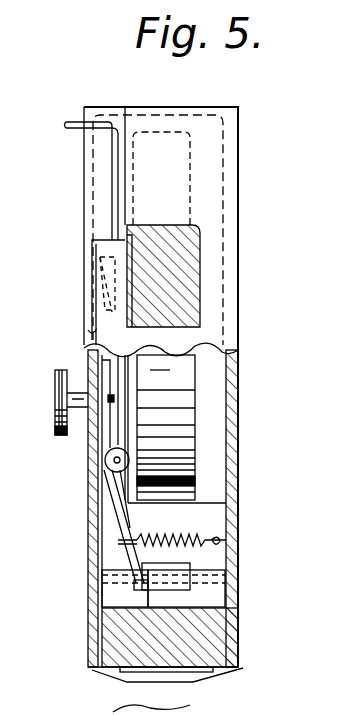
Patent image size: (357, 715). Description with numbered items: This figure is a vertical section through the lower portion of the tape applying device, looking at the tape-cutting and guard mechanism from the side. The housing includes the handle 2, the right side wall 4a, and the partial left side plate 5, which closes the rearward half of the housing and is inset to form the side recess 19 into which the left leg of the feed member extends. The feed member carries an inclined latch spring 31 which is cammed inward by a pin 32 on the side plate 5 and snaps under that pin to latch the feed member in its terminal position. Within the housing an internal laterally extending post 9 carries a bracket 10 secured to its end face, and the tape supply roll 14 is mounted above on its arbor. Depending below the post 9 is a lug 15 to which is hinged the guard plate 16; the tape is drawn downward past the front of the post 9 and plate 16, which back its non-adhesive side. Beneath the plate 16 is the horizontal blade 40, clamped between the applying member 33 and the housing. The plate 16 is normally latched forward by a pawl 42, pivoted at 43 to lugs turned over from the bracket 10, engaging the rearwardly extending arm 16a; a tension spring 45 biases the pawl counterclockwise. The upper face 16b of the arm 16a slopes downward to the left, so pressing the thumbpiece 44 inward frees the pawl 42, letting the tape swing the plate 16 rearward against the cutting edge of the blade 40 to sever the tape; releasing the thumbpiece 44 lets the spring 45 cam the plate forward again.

The handle 2 is at (200, 310).
The right side wall 4a is at (228, 160).
The partial left side plate 5 is at (88, 250).
The post 9 is at (205, 508).
The bracket 10 is at (128, 485).
The tape supply roll 14 is at (197, 428).
The lug 15 is at (170, 567).
The plate 16 is at (207, 600).
The rearwardly extending arm 16a is at (102, 622).
The upper face 16b is at (102, 590).
The side recess 19 is at (93, 161).
The latch spring 31 is at (96, 283).
The pin 32 is at (92, 322).
The applying member 33 is at (113, 672).
The blade 40 is at (197, 670).
The pawl 42 is at (118, 507).
The pivot 43 is at (104, 468).
The thumbpiece 44 is at (62, 428).
The tension spring 45 is at (180, 530).